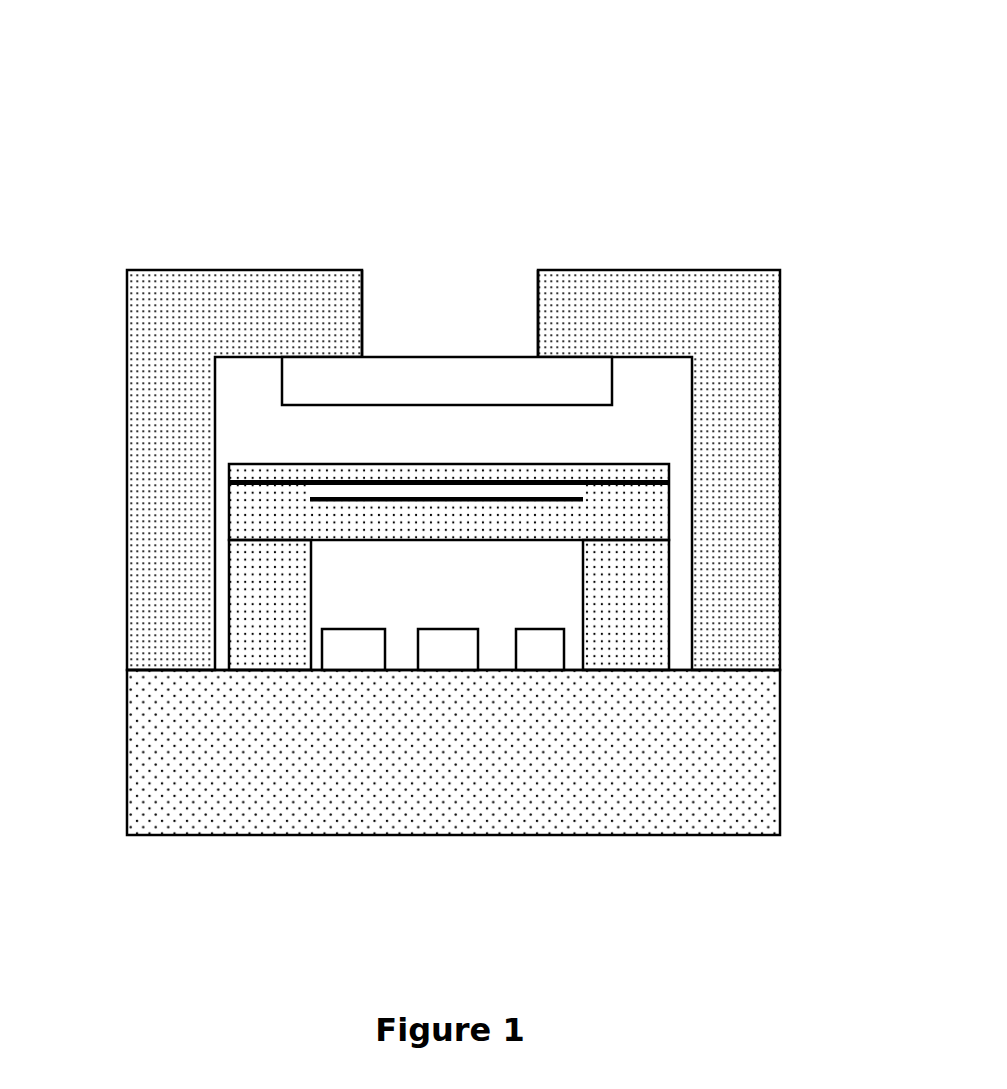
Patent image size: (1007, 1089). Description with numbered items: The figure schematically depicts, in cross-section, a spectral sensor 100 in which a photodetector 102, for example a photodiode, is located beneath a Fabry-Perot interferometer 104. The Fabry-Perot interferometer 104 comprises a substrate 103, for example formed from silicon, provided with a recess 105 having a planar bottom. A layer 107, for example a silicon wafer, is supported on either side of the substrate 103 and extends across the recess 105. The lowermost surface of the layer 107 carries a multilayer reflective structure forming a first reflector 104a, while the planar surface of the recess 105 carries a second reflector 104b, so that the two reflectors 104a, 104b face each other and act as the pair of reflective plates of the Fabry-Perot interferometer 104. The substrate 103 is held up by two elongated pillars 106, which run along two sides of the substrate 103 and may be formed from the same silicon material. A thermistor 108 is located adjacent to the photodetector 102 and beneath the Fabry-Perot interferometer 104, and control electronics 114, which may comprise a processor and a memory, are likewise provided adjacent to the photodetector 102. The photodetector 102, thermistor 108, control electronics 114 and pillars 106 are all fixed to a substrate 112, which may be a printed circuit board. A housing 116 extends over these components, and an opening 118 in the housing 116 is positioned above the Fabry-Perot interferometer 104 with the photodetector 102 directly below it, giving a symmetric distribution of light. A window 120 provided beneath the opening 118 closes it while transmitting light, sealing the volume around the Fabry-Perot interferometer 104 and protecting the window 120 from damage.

The spectral sensor 100 is at (446, 480).
The photodetector 102 is at (447, 650).
The substrate 103 is at (255, 505).
The Fabry-Perot interferometer 104 is at (446, 387).
The first reflector 104a is at (390, 480).
The second reflector 104b is at (323, 500).
The recess 105 is at (328, 493).
The elongated pillars 106 is at (605, 560).
The layer 107 is at (320, 465).
The thermistor 108 is at (350, 655).
The substrate 112 is at (352, 768).
The control electronics 114 is at (537, 652).
The housing 116 is at (660, 325).
The opening 118 is at (412, 285).
The window 120 is at (468, 380).